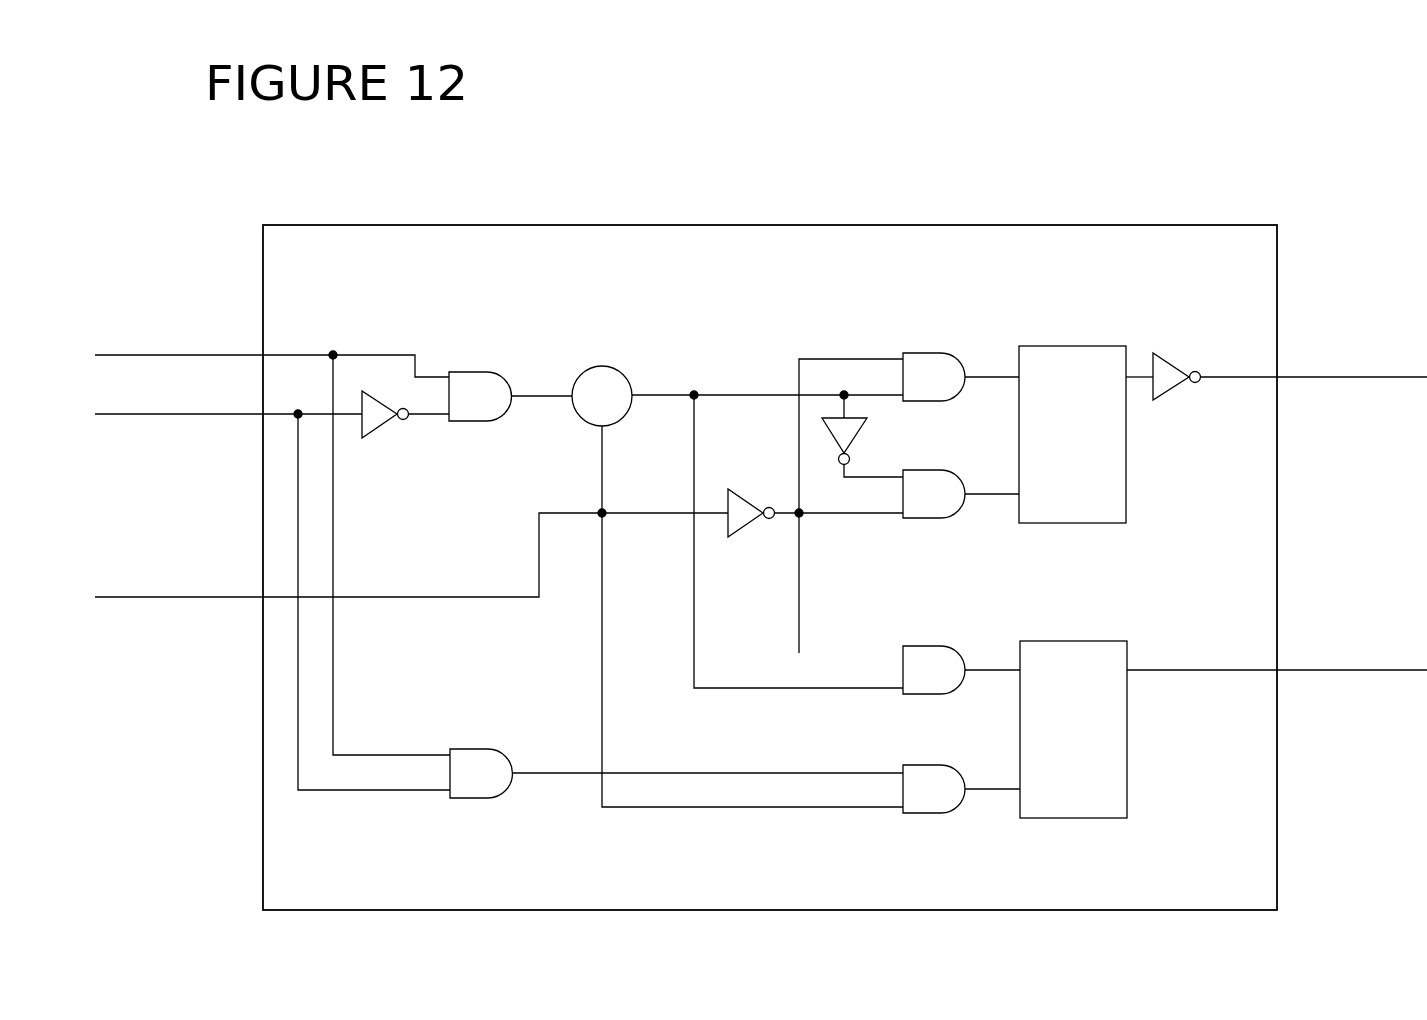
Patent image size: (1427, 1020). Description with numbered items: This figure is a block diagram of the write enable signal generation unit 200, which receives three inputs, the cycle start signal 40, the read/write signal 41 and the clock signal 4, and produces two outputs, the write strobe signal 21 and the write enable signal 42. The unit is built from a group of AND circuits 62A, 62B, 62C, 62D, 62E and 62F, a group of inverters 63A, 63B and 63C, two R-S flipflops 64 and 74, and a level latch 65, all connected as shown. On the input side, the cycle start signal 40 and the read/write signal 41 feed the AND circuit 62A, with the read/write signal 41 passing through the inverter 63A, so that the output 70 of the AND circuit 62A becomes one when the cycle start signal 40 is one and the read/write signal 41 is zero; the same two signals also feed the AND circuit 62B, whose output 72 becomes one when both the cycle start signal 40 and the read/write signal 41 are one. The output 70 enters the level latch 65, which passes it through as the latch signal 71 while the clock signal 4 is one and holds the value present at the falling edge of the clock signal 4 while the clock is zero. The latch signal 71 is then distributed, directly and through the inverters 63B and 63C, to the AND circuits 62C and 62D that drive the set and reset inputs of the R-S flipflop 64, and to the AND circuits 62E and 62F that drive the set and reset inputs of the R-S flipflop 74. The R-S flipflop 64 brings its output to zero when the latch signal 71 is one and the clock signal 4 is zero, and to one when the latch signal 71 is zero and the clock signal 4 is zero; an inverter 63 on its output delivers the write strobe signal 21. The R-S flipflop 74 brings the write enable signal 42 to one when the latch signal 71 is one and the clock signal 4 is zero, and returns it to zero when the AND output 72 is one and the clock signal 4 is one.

The write enable signal generation unit 200 is at (866, 225).
The cycle start signal 40 is at (121, 353).
The read/write signal 41 is at (152, 418).
The clock signal 4 is at (133, 599).
The AND circuit 62A is at (480, 370).
The inverter 63A is at (378, 432).
The output of the AND circuit 62A 70 is at (541, 392).
The level latch 65 is at (605, 366).
The latch signal 71 is at (755, 390).
The AND circuit 62C is at (928, 353).
The inverter 63C is at (855, 440).
The AND circuit 62D is at (920, 518).
The inverter 63B is at (745, 527).
The R-S flipflop 64 is at (1040, 345).
The inverter 63 is at (1170, 392).
The write strobe signal 21 is at (1313, 380).
The AND circuit 62E is at (928, 646).
The R-S flipflop 74 is at (1043, 640).
The write enable signal 42 is at (1313, 672).
The output of the AND circuit 62B 72 is at (546, 755).
The AND circuit 62B is at (468, 800).
The AND circuit 62F is at (925, 815).